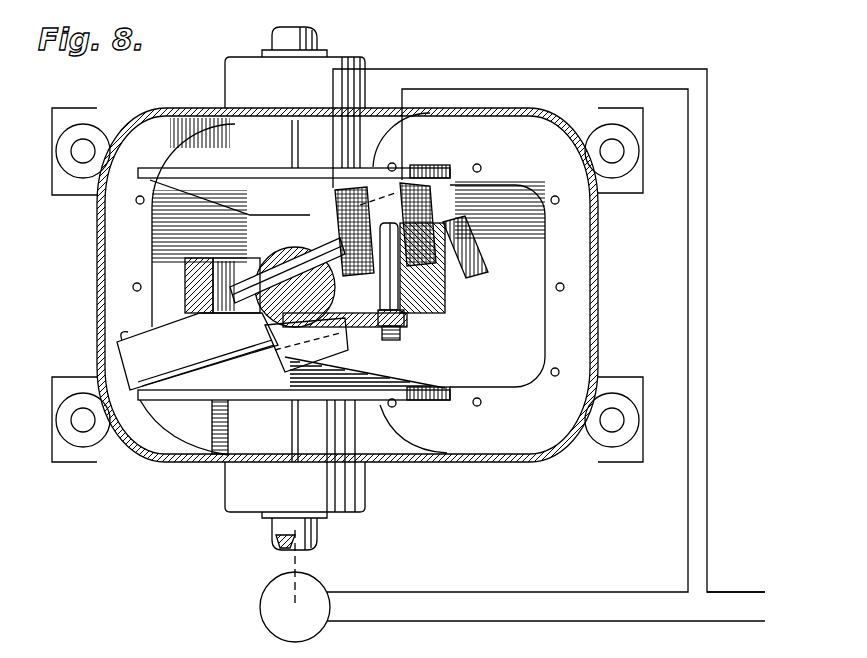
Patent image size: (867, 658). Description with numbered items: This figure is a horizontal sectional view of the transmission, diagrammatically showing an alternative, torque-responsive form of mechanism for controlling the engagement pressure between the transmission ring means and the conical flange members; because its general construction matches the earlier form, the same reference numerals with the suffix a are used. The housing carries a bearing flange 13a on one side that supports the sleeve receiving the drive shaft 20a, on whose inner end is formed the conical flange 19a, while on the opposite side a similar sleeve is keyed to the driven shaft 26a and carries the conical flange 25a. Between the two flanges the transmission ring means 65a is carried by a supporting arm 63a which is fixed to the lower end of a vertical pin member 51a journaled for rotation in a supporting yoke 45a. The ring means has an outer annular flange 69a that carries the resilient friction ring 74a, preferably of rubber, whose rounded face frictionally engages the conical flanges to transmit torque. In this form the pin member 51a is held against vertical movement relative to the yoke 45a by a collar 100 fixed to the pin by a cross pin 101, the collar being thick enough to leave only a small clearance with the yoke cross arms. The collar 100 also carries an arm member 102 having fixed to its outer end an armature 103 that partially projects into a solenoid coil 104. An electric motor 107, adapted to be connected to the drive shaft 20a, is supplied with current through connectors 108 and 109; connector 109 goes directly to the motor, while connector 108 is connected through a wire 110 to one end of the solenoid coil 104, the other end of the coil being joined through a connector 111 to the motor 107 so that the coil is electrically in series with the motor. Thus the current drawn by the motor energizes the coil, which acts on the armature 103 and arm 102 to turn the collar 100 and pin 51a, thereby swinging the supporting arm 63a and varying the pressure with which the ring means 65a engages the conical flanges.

The bearing flange 13a is at (366, 490).
The conical flange 19a is at (380, 390).
The drive shaft 20a is at (272, 533).
The conical flange 25a is at (232, 176).
The driven shaft 26a is at (318, 40).
The supporting yoke 45a is at (170, 290).
The pin member 51a is at (300, 236).
The supporting arm 63a is at (292, 370).
The transmission ring means 65a is at (136, 357).
The outer annular flange 69a is at (478, 250).
The friction ring 74a is at (192, 370).
The collar 100 is at (283, 235).
The cross pin 101 is at (265, 290).
The arm member 102 is at (368, 335).
The armature 103 is at (390, 296).
The solenoid coil 104 is at (412, 195).
The electric motor 107 is at (270, 619).
The connector 108 is at (735, 590).
The connector 109 is at (728, 622).
The wire 110 is at (708, 318).
The connector 111 is at (688, 288).